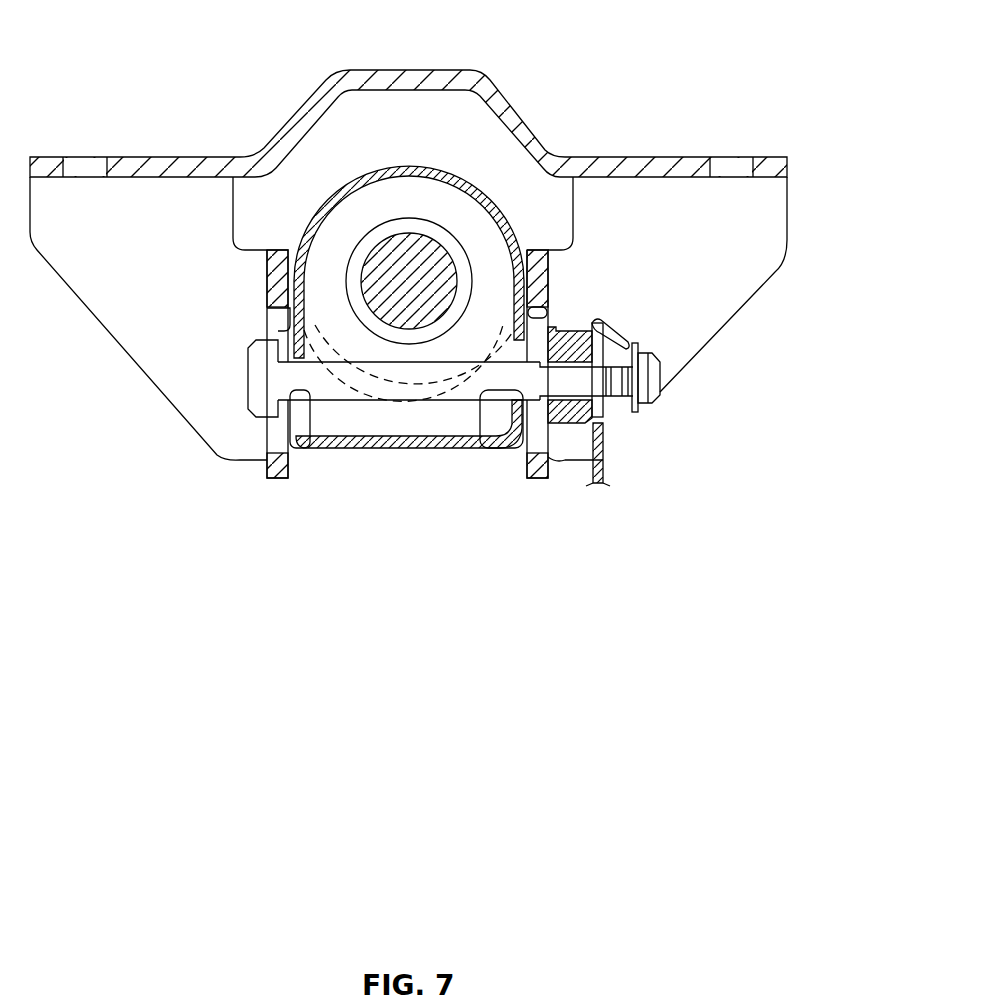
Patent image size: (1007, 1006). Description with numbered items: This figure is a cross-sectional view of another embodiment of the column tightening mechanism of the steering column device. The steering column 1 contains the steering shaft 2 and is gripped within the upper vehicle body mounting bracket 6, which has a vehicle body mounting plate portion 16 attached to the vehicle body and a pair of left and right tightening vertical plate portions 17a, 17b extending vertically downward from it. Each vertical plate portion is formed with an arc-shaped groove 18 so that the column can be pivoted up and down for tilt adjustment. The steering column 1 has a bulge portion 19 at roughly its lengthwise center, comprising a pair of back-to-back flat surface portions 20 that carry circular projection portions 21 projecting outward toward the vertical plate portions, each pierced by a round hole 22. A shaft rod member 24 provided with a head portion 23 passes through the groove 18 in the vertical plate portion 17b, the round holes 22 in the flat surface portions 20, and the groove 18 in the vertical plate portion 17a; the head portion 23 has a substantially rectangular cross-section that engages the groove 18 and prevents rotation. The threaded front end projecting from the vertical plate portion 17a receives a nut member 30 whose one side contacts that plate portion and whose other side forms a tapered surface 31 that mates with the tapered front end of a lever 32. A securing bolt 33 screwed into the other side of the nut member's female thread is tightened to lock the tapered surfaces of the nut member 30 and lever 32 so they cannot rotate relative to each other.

The steering column 1 is at (333, 193).
The steering shaft 2 is at (417, 226).
The upper vehicle body mounting bracket 6 is at (553, 150).
The vehicle body mounting plate portion 16 is at (680, 157).
The tightening vertical plate portion 17a is at (535, 483).
The tightening vertical plate portion 17b is at (270, 483).
The arc-shaped groove 18 is at (263, 313).
The bulge portion 19 is at (415, 449).
The flat surface portion 20 is at (290, 318).
The projection portion 21 is at (266, 456).
The round hole 22 is at (311, 450).
The head portion 23 is at (257, 383).
The shaft rod member 24 is at (349, 450).
The nut member 30 is at (574, 427).
The tapered surface 31 is at (620, 332).
The lever 32 is at (607, 460).
The securing bolt 33 is at (650, 400).